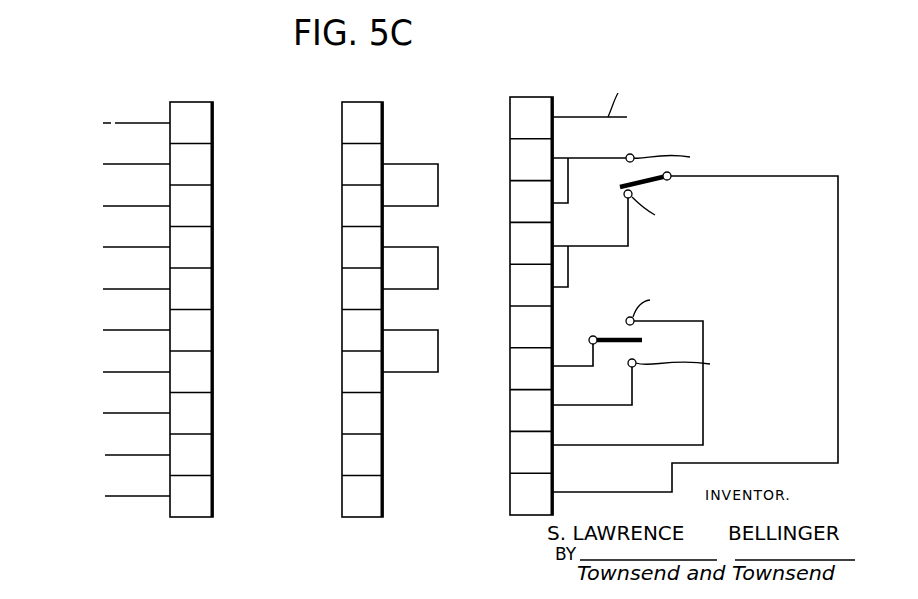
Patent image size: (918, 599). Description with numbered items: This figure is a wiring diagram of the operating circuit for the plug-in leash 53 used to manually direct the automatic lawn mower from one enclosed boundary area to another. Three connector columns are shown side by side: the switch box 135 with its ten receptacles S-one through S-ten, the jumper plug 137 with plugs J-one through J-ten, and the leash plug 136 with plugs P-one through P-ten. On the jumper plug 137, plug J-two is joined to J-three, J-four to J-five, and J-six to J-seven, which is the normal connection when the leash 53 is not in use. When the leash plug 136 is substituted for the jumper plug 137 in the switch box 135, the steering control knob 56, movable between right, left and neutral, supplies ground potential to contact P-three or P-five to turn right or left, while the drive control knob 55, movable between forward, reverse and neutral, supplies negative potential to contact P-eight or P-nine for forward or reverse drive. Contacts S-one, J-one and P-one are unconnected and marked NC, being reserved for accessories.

The plug-in leash 53 is at (591, 64).
The drive control knob 55 is at (615, 337).
The steering control knob 56 is at (620, 187).
The switch box 135 is at (196, 517).
The leash plug 136 is at (526, 515).
The jumper plug 137 is at (372, 517).